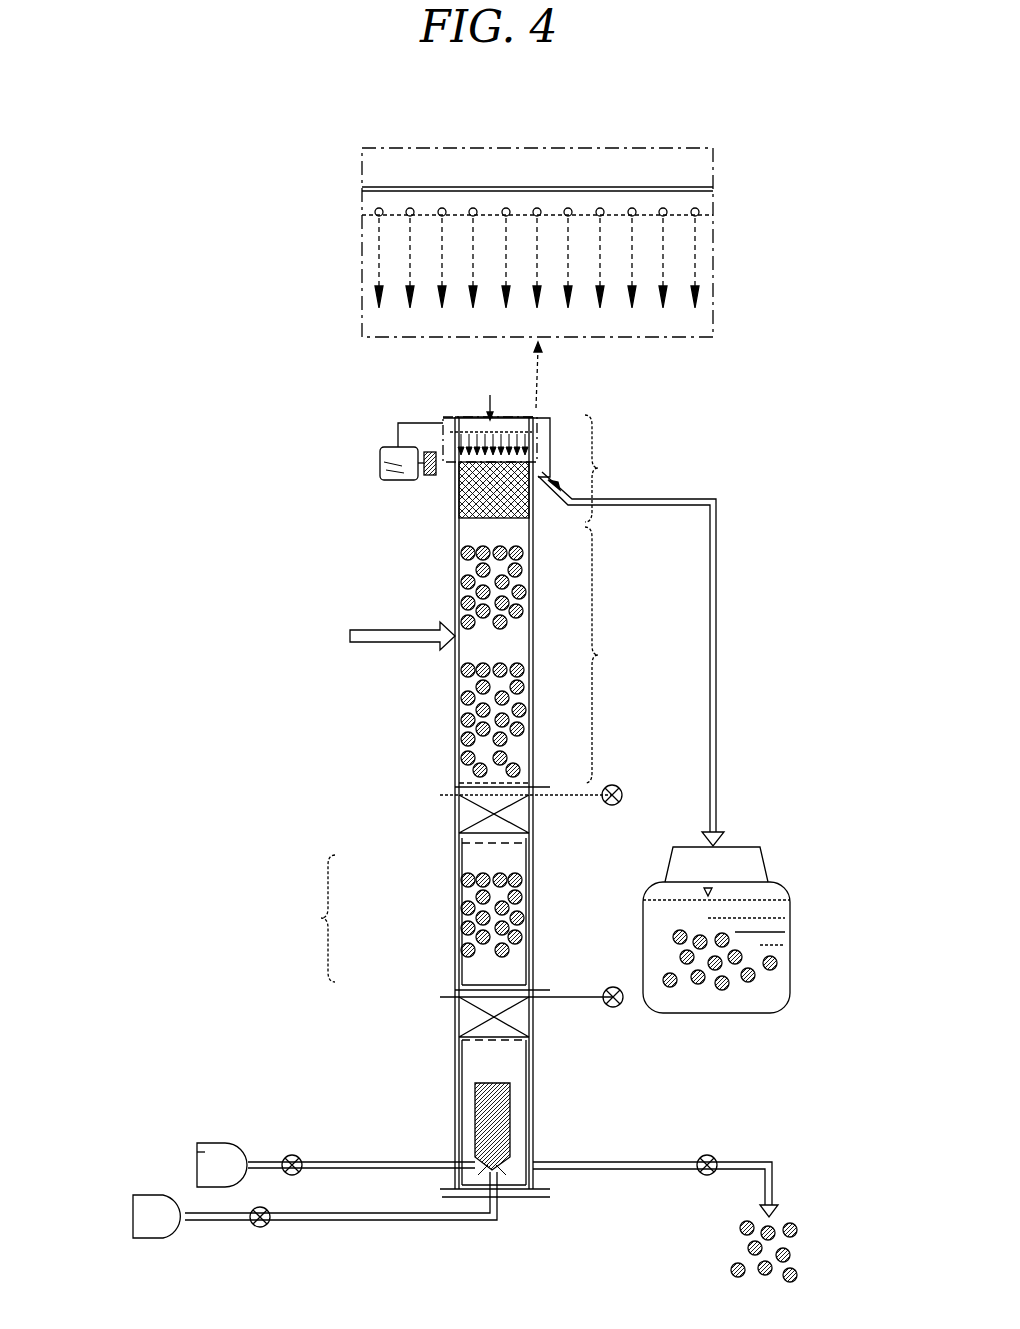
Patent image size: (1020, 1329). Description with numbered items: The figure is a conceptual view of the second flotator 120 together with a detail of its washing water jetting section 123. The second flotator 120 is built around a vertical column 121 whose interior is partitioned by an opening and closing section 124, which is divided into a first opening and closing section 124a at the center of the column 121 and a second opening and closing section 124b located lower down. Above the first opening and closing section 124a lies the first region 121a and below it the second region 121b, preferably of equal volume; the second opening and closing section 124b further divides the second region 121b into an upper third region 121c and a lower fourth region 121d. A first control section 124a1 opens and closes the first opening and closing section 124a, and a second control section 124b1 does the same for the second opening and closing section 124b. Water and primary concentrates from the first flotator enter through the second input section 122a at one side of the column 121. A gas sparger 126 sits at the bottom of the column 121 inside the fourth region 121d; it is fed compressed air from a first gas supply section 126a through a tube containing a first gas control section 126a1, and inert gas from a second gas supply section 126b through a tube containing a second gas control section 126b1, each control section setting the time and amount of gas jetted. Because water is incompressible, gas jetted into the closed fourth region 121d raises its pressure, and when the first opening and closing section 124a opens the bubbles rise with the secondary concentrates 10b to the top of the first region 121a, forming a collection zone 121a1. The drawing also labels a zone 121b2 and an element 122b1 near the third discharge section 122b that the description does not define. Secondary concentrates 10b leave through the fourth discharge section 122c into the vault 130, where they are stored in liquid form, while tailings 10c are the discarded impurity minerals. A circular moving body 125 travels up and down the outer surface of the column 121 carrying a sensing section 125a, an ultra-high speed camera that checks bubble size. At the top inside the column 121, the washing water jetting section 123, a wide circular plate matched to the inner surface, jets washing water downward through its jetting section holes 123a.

The second flotator 120 is at (497, 776).
The column 121 is at (455, 540).
The first region 121a is at (455, 585).
The collection zone 121a1 is at (621, 468).
The second region 121b is at (530, 843).
The lower section of first chamber 121b2 is at (621, 655).
The third region 121c is at (532, 876).
The fourth region 121d is at (532, 1072).
The second input section 122a is at (418, 646).
The third discharge section 122b is at (651, 1162).
The outlet valve 122b1 is at (701, 1177).
The fourth discharge section 122c is at (718, 545).
The washing water jetting section 123 is at (534, 305).
The jetting section hole 123a is at (378, 212).
The opening and closing section 124 is at (309, 918).
The first opening and closing section 124a is at (455, 815).
The first control section 124a1 is at (616, 784).
The second opening and closing section 124b is at (455, 1018).
The second control section 124b1 is at (610, 987).
The circular moving body 125 is at (548, 417).
The sensing section 125a is at (380, 458).
The gas sparger 126 is at (512, 1125).
The first gas supply section 126a is at (197, 1155).
The first gas control section 126a1 is at (292, 1153).
The second gas supply section 126b is at (133, 1207).
The second gas control section 126b1 is at (265, 1229).
The vault 130 is at (764, 964).
The secondary concentrates 10b is at (698, 984).
The tailings 10c is at (797, 1232).